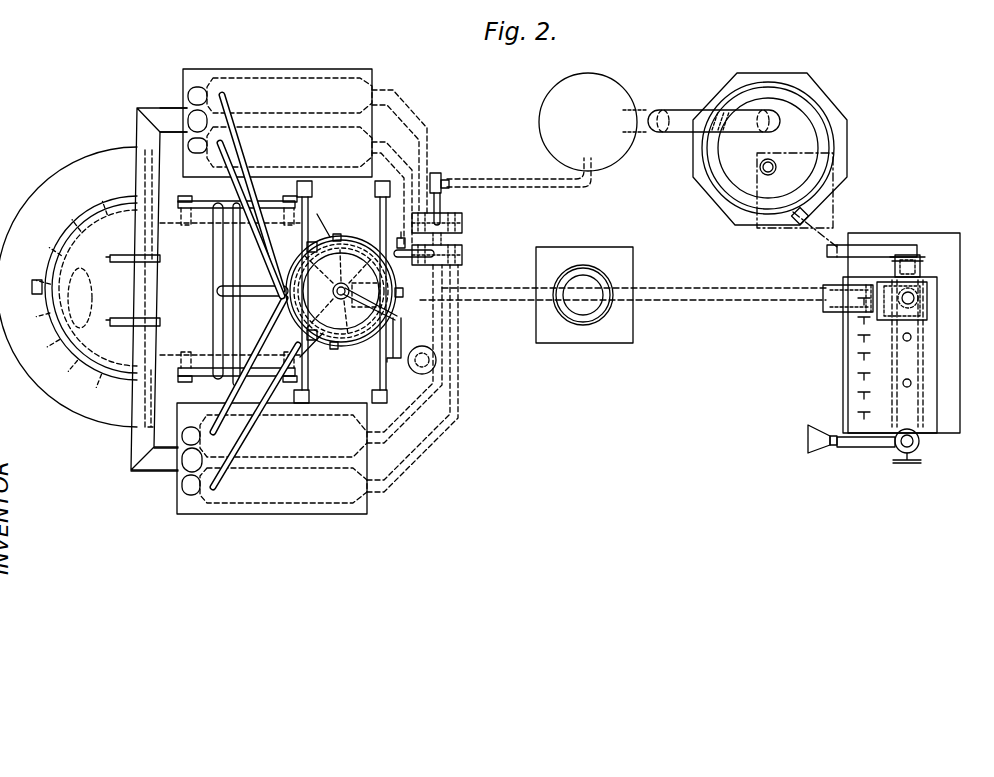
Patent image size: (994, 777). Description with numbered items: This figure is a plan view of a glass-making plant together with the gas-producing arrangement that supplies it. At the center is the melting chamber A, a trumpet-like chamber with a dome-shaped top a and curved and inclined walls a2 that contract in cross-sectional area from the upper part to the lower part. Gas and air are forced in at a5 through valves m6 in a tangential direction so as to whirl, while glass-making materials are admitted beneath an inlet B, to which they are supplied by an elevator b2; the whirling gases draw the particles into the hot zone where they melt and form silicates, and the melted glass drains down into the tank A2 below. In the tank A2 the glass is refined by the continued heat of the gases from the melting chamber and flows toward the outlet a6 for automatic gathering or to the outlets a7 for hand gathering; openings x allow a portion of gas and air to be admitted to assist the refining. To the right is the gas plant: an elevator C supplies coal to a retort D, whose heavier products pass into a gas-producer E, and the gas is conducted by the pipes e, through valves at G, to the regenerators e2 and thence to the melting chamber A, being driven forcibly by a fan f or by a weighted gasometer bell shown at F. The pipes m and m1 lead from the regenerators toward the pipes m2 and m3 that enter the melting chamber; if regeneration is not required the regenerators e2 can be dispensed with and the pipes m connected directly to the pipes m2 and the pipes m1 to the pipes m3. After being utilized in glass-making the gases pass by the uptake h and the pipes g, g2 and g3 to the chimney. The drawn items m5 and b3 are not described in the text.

The pipe g is at (141, 134).
The pipe g2 is at (168, 114).
The regenerators e2 is at (274, 291).
The pipes m1 is at (411, 113).
The pipes m is at (395, 153).
The pipes m2 is at (268, 178).
The pipes m3 is at (267, 250).
The openings x is at (187, 223).
The tank A2 is at (230, 293).
The dome-shaped top a is at (385, 252).
The gas and air inlets a5 is at (331, 254).
The melting chamber A is at (341, 291).
The curved and inclined walls a2 is at (338, 344).
The rim block m5 is at (339, 238).
The valves m6 is at (414, 305).
The inlet B is at (345, 280).
The elevator b2 is at (406, 332).
The handle knob b3 is at (436, 360).
The valves G is at (462, 222).
The fan f is at (441, 178).
The pipes e is at (496, 188).
The weighted bell of a gasometer F is at (588, 122).
The gas-producer E is at (770, 160).
The pipe g3 is at (516, 302).
The retort D is at (930, 353).
The elevator C is at (808, 437).
The outlet a6 is at (32, 288).
The outlets a7 is at (78, 280).
The uptake h is at (138, 290).